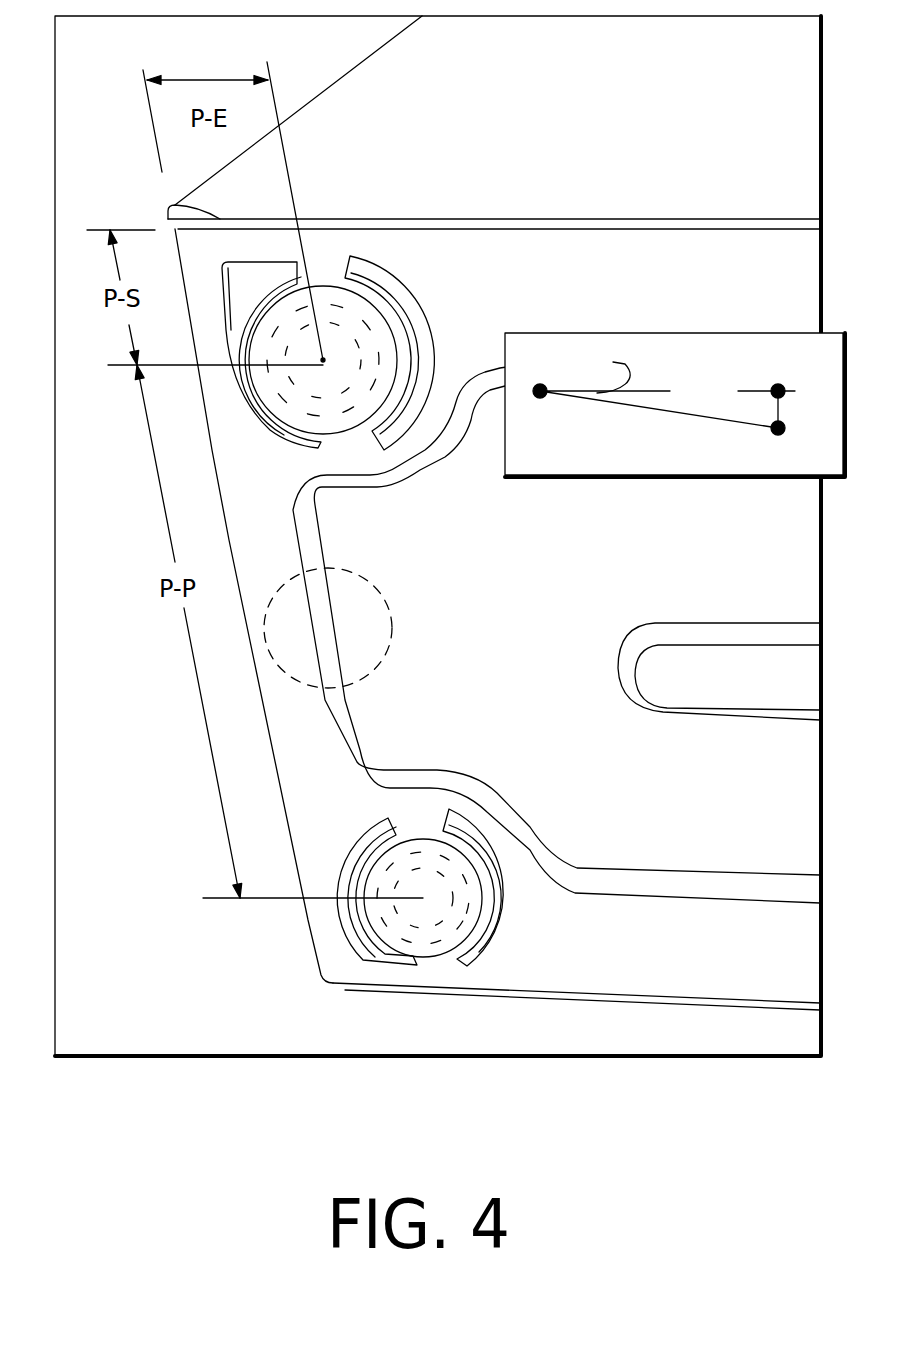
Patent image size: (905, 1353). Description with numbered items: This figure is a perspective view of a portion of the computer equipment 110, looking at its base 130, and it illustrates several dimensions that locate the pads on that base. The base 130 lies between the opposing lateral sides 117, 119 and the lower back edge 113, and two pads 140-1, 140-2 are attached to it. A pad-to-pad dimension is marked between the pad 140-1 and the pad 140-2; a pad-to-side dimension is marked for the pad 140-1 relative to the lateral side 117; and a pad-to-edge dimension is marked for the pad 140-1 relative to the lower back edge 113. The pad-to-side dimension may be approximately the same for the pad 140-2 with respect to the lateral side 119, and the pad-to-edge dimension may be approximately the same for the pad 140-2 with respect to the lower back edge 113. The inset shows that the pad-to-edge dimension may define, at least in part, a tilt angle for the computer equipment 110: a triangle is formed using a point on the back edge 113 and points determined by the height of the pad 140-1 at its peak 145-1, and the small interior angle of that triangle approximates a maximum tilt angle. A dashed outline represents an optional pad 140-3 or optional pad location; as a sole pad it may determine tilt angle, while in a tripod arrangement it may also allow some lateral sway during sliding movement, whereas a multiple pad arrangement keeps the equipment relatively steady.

The computer equipment 110 is at (449, 582).
The lower back edge 113 is at (248, 642).
The lateral side 117 is at (683, 143).
The lateral side 119 is at (603, 1006).
The base 130 is at (575, 557).
The pad 140-1 is at (347, 420).
The pad 140-2 is at (437, 938).
The optional pad 140-3 is at (393, 650).
The peak 145-1 is at (323, 360).